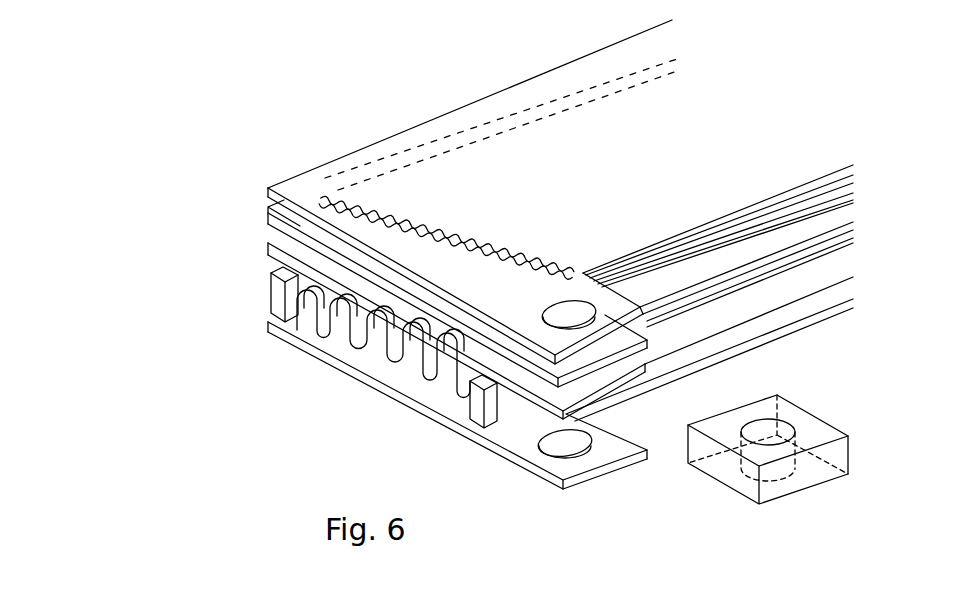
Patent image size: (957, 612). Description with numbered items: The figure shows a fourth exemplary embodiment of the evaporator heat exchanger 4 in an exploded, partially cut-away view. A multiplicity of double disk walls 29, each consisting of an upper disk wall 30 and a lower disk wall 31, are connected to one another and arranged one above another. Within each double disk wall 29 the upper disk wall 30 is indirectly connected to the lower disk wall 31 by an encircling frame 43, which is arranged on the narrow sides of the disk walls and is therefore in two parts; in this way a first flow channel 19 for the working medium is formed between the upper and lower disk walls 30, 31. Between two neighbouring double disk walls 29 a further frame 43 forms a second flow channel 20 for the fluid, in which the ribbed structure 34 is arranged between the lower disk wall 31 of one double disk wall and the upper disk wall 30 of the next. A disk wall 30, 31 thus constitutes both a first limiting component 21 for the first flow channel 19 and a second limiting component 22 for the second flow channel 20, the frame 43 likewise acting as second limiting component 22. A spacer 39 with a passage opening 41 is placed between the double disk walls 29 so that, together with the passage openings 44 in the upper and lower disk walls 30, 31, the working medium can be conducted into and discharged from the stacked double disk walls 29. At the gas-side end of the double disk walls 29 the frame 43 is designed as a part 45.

The evaporator heat exchanger 4 is at (247, 441).
The first flow channel 19 is at (343, 247).
The second flow channel 20 is at (358, 370).
The first limiting component 21 is at (303, 187).
The second limiting component 22 is at (502, 397).
The double disk wall 29 is at (228, 200).
The upper disk wall 30 is at (298, 349).
The lower disk wall 31 is at (270, 240).
The ribbed structure 34 is at (457, 140).
The spacer 39 is at (838, 487).
The passage opening 41 is at (778, 428).
The frame 43 is at (271, 292).
The passage opening 44 is at (580, 305).
The part 45 is at (287, 213).